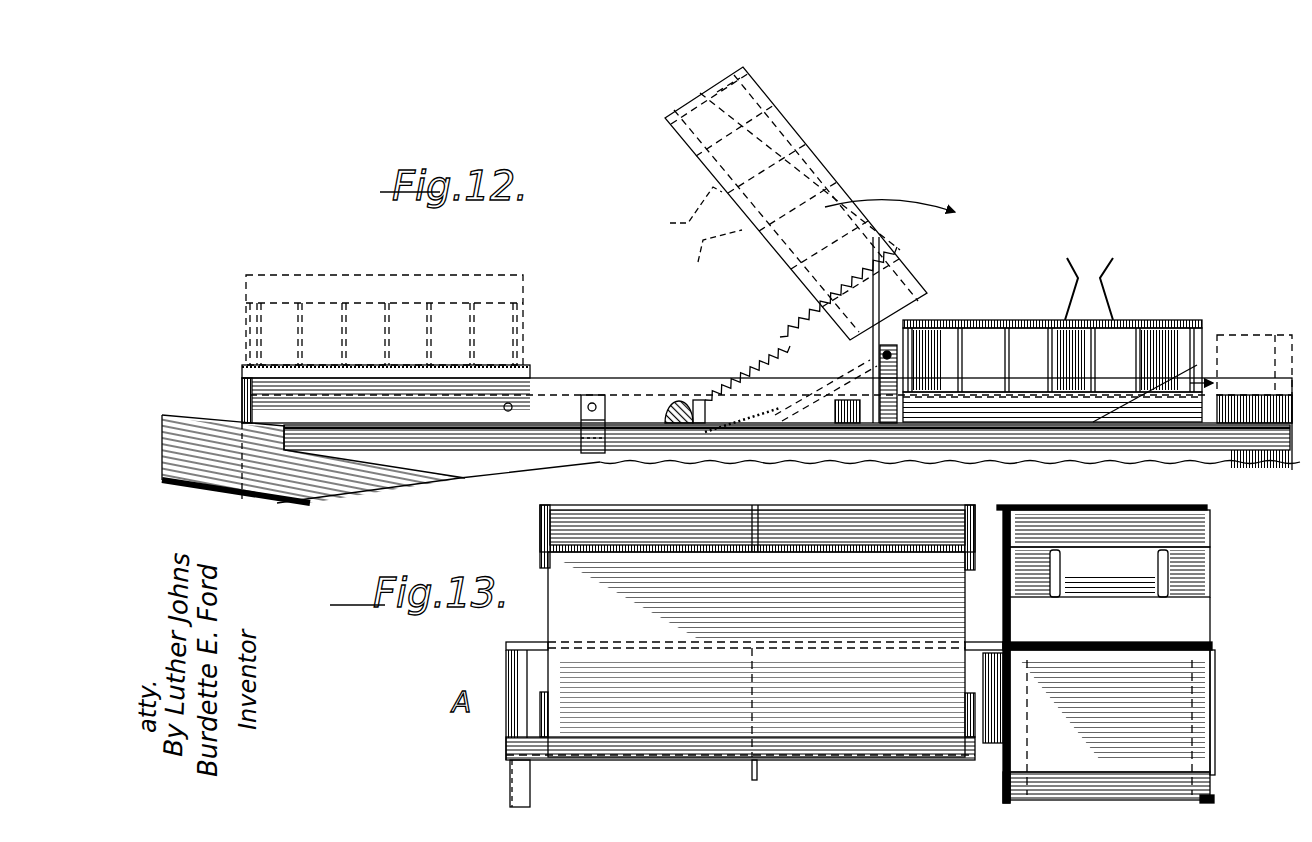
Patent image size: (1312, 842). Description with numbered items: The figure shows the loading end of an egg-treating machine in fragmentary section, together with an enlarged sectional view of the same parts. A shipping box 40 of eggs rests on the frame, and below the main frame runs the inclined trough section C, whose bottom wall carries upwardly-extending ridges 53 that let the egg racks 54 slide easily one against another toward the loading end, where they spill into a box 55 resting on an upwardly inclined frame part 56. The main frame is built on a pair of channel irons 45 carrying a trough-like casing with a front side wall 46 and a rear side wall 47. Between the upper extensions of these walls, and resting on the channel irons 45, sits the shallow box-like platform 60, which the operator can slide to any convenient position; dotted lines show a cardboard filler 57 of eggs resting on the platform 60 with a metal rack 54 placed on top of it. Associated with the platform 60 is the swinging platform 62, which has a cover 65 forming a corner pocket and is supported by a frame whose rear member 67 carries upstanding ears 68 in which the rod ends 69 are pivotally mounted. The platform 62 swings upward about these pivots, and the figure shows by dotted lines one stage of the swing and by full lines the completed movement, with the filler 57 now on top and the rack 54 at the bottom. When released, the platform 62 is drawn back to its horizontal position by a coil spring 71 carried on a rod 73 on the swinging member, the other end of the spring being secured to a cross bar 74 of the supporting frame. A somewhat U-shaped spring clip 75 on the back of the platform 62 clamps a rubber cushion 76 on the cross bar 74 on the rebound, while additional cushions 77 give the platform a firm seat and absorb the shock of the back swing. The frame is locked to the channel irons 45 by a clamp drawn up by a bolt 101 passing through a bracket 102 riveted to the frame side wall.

In FIG. 13, the shipping box 40 is at (740, 656).
In FIG. 12, the channel irons 45 is at (506, 440).
In FIG. 13, the channel irons 45 is at (1022, 576).
In FIG. 13, the front side wall 46 is at (1003, 604).
In FIG. 12, the rear side wall 47 is at (472, 464).
In FIG. 13, the rear side wall 47 is at (1213, 606).
In FIG. 12, the upwardly-extending ridges 53 is at (262, 502).
In FIG. 13, the upwardly-extending ridges 53 is at (1150, 568).
In FIG. 12, the egg rack 54 is at (330, 290).
In FIG. 13, the box 55 is at (1112, 722).
In FIG. 13, the upwardly inclined frame part 56 is at (1003, 796).
In FIG. 12, the filler 57 is at (250, 340).
In FIG. 12, the platform 60 is at (482, 366).
In FIG. 13, the platform 60 is at (1092, 506).
In FIG. 12, the swinging platform 62 is at (785, 270).
In FIG. 12, the cover 65 is at (948, 430).
In FIG. 12, the rear member 67 is at (550, 396).
In FIG. 12, the upstanding ears 68 is at (870, 406).
In FIG. 12, the rod ends 69 is at (846, 348).
In FIG. 12, the coil spring 71 is at (766, 356).
In FIG. 12, the rod 73 is at (904, 250).
In FIG. 12, the cross bar 74 is at (662, 404).
In FIG. 12, the spring clip 75 is at (716, 236).
In FIG. 12, the rubber cushion 76 is at (680, 384).
In FIG. 12, the additional cushions 77 is at (1148, 322).
In FIG. 12, the bolt 101 is at (583, 410).
In FIG. 12, the bracket 102 is at (600, 410).
In FIG. 12, the trough section C is at (340, 496).